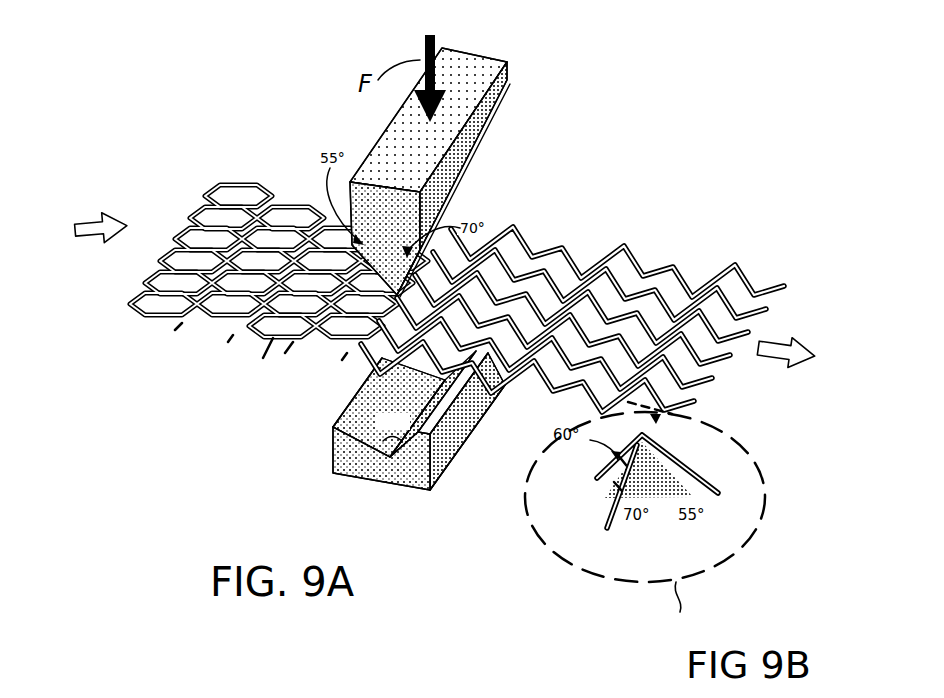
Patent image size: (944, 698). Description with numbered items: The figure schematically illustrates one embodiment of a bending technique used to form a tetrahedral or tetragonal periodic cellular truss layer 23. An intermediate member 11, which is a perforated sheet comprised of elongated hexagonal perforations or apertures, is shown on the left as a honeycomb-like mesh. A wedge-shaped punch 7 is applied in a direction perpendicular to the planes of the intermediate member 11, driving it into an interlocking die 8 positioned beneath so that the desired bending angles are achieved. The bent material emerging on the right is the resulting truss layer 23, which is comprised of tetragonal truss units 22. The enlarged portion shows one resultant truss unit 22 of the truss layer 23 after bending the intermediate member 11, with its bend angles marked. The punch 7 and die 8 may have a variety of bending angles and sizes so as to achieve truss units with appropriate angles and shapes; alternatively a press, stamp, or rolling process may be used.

The wedge-shaped punch 7 is at (509, 106).
The interlocking die 8 is at (378, 481).
The intermediate member 11 is at (283, 338).
The tetragonal truss unit 22 is at (750, 272).
The truss layer 23 is at (620, 303).